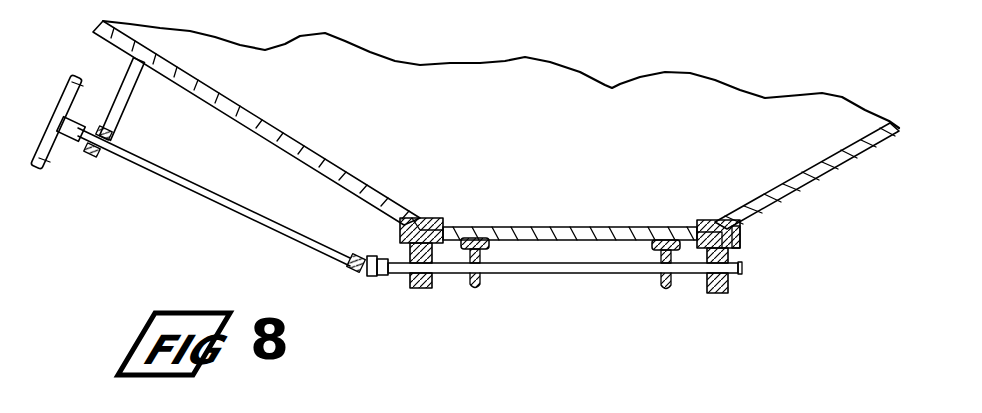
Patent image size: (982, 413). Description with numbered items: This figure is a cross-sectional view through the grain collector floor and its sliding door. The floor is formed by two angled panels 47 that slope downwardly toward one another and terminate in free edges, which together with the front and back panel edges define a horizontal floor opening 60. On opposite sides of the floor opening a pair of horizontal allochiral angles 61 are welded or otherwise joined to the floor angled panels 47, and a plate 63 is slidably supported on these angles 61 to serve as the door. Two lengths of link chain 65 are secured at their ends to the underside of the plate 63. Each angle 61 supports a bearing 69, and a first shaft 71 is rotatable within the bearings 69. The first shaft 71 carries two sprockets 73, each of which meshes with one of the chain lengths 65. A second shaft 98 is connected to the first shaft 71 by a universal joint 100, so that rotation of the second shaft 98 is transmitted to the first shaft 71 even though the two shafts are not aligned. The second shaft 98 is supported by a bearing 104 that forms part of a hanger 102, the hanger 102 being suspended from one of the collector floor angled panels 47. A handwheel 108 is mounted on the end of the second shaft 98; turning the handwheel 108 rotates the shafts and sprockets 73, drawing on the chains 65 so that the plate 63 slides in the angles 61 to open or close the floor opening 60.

The floor angled panel 47 is at (284, 143).
The floor opening 60 is at (697, 226).
The allochiral angle 61 is at (741, 236).
The plate 63 is at (577, 226).
The link chain 65 is at (492, 246).
The bearing 69 is at (422, 287).
The first shaft 71 is at (578, 268).
The sprocket 73 is at (667, 286).
The second shaft 98 is at (205, 197).
The universal joint 100 is at (350, 268).
The hanger 102 is at (128, 78).
The bearing 104 is at (112, 135).
The handwheel 108 is at (44, 147).